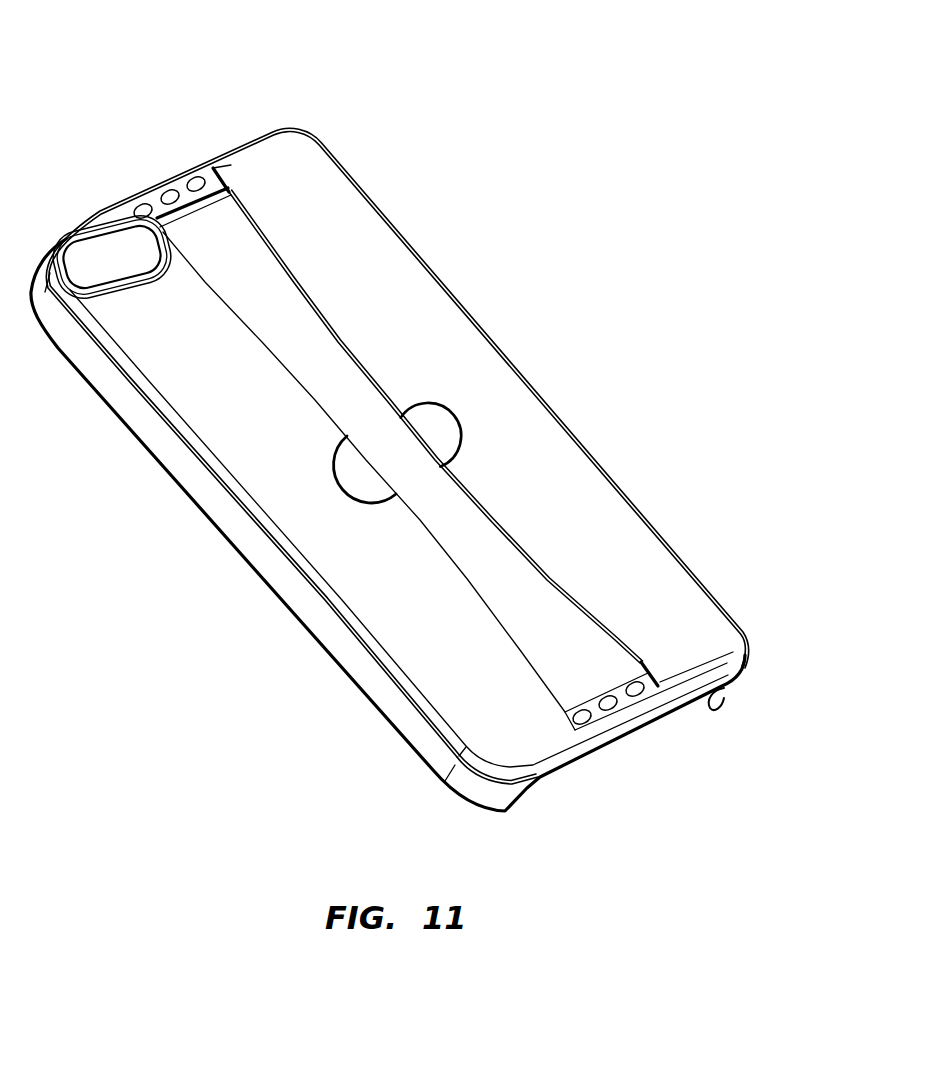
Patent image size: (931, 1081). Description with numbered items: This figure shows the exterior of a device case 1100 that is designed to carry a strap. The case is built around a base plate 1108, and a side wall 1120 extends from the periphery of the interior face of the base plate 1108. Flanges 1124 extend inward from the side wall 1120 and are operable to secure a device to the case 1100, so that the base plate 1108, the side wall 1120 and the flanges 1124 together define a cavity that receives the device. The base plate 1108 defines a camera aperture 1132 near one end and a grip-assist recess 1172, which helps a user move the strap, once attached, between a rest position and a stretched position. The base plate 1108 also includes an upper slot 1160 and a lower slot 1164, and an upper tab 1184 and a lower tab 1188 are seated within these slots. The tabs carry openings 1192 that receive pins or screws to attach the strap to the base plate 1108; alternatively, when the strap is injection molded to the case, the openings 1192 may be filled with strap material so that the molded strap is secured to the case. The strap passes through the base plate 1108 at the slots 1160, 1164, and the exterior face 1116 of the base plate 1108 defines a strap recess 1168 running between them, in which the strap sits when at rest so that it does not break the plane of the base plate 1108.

The device case 1100 is at (616, 108).
The base plate 1108 is at (628, 540).
The exterior face 1116 is at (446, 622).
The side wall 1120 is at (290, 582).
The flanges 1124 is at (712, 700).
The camera aperture 1132 is at (97, 258).
The upper slot 1160 is at (195, 208).
The lower slot 1164 is at (600, 690).
The strap recess 1168 is at (338, 370).
The grip-assist recess 1172 is at (451, 424).
The upper tab 1184 is at (215, 168).
The lower tab 1188 is at (645, 682).
The openings 1192 is at (140, 202).